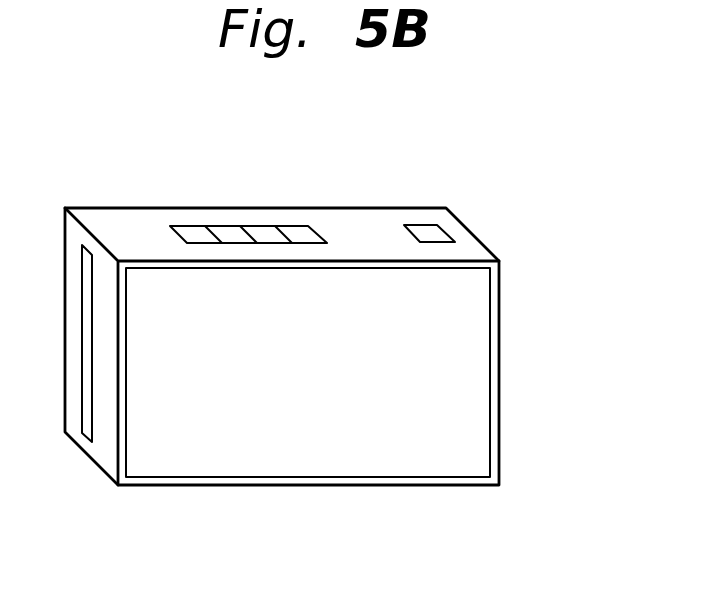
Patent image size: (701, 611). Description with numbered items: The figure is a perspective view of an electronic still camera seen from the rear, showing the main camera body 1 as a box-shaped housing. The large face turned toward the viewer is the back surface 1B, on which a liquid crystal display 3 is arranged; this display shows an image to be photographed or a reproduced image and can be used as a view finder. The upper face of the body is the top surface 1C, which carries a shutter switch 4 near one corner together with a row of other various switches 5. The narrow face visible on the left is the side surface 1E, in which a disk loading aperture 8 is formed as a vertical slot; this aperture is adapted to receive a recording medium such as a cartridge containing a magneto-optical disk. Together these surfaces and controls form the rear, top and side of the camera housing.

The main camera body 1 is at (289, 178).
The back surface 1B is at (425, 457).
The top surface 1C is at (360, 233).
The side surface 1E is at (107, 455).
The liquid crystal display 3 is at (217, 458).
The shutter switch 4 is at (428, 235).
The other various switches 5 is at (230, 235).
The disk loading aperture 8 is at (88, 372).